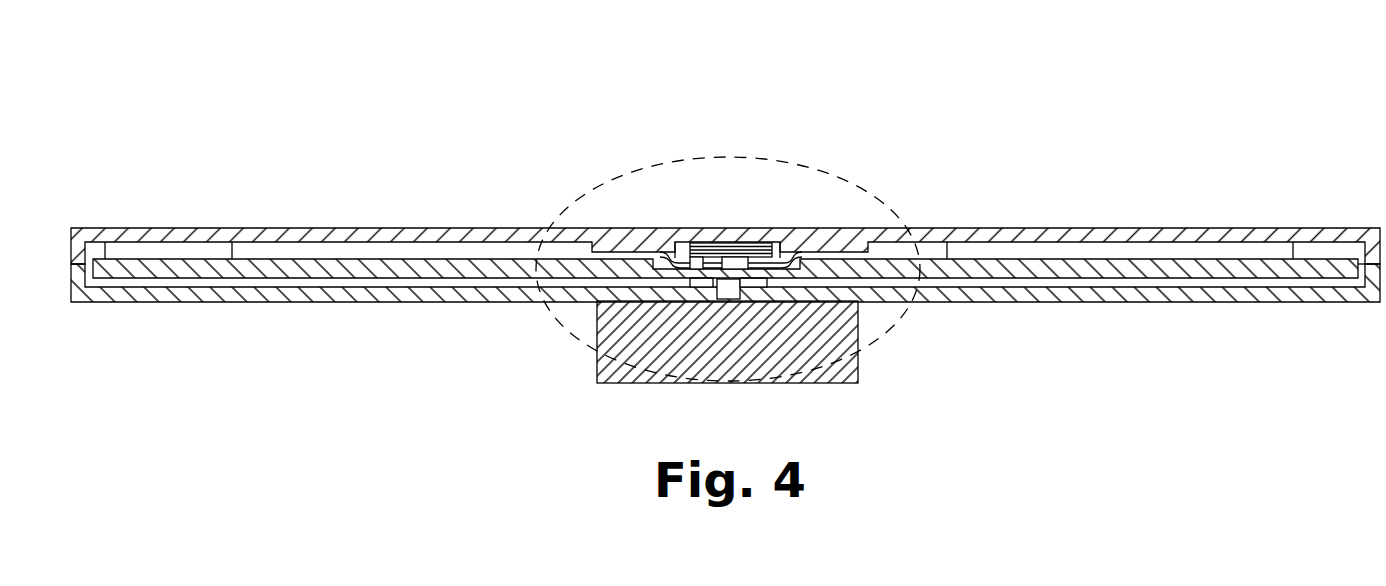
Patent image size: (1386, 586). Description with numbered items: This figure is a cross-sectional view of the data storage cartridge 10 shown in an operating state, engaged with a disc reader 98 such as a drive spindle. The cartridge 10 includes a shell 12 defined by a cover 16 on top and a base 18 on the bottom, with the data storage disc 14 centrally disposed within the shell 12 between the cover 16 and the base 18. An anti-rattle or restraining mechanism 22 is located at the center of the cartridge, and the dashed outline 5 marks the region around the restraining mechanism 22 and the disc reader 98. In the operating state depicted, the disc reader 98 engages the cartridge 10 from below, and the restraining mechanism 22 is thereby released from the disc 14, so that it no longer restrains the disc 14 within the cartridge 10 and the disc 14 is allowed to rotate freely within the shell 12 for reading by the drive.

The detail region circle 5 is at (797, 160).
The data storage cartridge 10 is at (475, 97).
The shell 12 is at (417, 182).
The data storage disc 14 is at (363, 279).
The cover 16 is at (280, 228).
The base 18 is at (252, 303).
The restraining mechanism 22 is at (652, 240).
The disc reader 98 is at (585, 363).